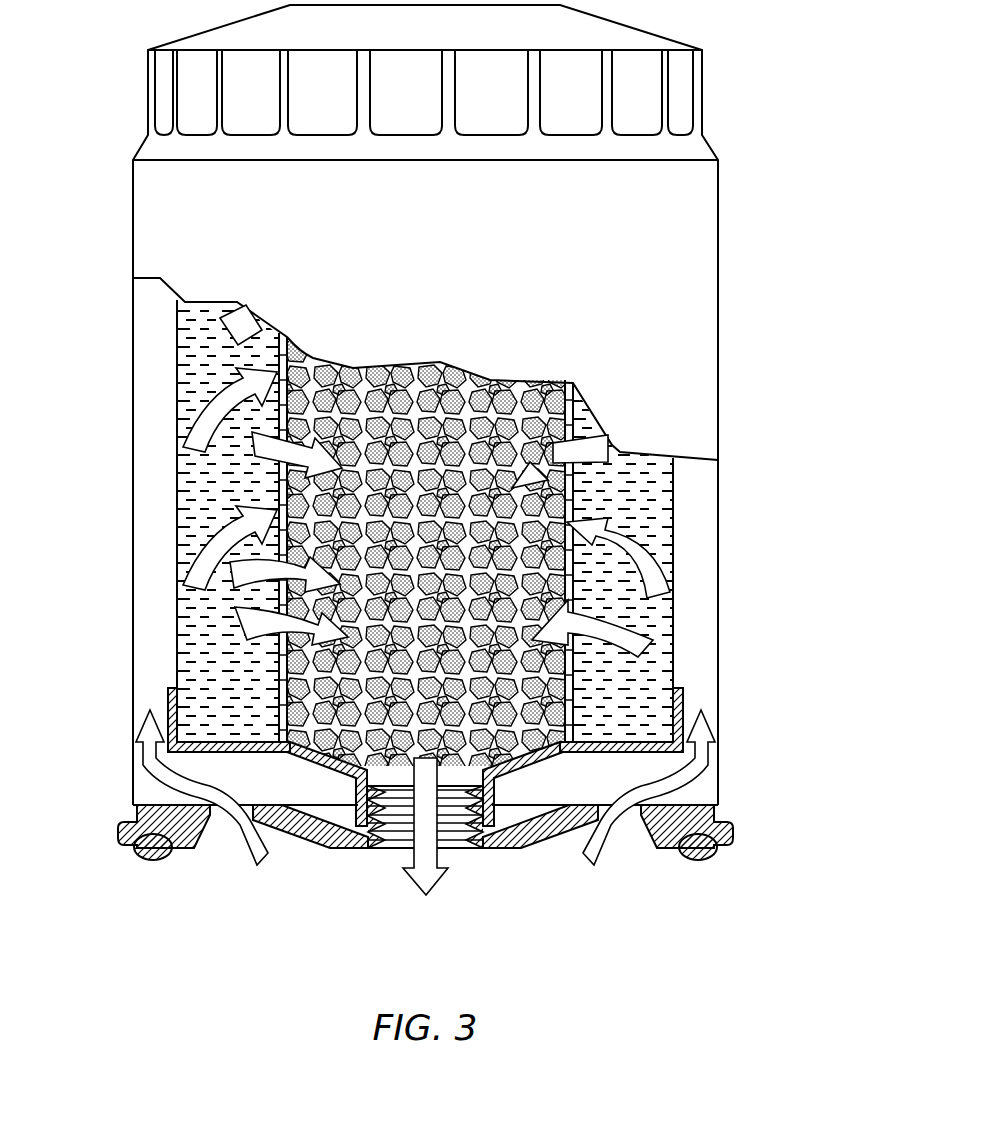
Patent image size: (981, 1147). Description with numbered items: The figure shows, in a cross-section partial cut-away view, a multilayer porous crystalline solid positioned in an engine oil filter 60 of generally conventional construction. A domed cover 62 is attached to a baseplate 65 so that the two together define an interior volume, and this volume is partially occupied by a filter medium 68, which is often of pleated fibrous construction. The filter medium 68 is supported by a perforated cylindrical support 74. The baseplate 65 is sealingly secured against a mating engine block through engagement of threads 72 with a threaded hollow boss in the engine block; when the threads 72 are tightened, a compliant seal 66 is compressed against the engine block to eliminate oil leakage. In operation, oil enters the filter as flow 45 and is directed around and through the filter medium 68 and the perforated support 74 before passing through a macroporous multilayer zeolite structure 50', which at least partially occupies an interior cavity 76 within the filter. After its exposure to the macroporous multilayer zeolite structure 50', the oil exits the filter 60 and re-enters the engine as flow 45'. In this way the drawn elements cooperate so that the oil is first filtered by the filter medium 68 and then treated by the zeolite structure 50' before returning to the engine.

The engine oil filter 60 is at (727, 193).
The domed cover 62 is at (152, 212).
The perforated cylindrical support 74 is at (568, 380).
The macroporous multilayer zeolite structure 50' is at (538, 553).
The filter medium 68 is at (660, 518).
The interior cavity 76 is at (403, 768).
The threads 72 is at (453, 848).
The flow 45' is at (384, 856).
The baseplate 65 is at (720, 808).
The compliant seal 66 is at (142, 856).
The flow 45 is at (425, 816).